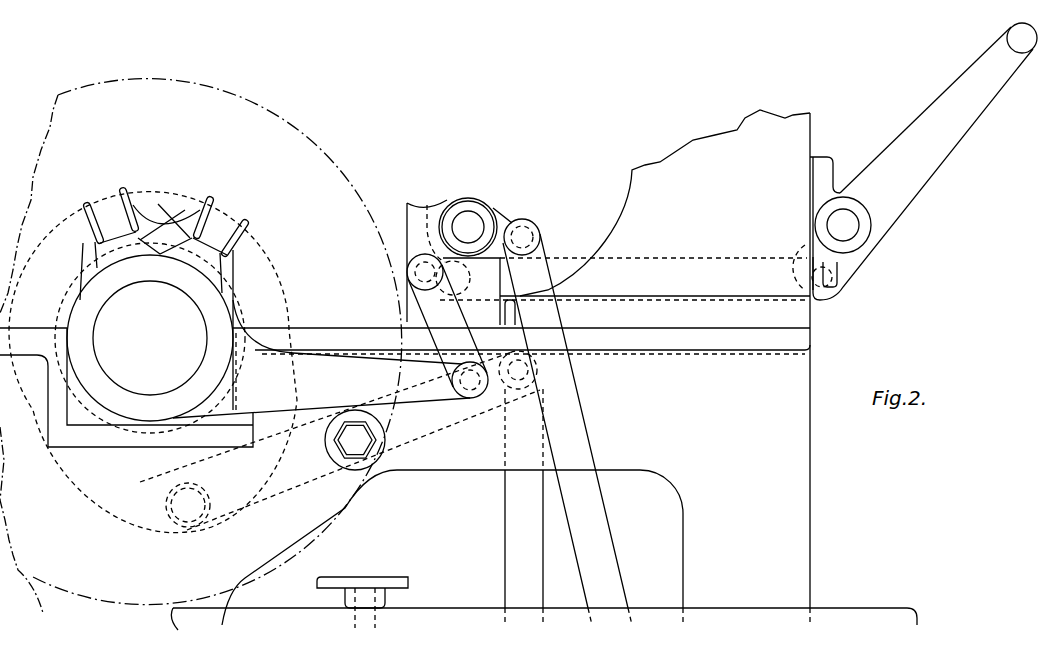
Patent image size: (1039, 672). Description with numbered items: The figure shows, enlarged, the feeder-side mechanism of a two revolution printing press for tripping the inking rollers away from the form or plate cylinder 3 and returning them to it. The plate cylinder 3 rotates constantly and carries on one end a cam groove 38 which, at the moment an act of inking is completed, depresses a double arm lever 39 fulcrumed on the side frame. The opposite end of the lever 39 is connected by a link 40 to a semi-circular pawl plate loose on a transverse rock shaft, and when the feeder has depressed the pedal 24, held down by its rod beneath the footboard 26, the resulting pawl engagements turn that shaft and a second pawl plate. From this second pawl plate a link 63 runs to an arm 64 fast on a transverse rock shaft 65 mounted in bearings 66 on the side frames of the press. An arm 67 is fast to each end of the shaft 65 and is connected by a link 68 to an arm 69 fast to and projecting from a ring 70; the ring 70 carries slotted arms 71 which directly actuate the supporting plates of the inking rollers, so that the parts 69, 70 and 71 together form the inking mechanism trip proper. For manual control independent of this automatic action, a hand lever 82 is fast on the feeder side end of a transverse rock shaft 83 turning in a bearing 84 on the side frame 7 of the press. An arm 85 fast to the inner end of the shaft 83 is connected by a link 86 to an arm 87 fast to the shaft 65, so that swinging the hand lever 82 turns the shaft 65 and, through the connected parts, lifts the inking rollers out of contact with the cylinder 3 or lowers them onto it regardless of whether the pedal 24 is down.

The form or plate cylinder 3 is at (333, 157).
The frame 7 is at (517, 367).
The pedal 24 is at (409, 583).
The footboard 26 is at (698, 612).
The cam groove 38 is at (136, 494).
The double arm lever 39 is at (432, 437).
The link 40 is at (505, 518).
The link 63 is at (612, 535).
The arm 64 is at (520, 220).
The transverse rock shaft 65 is at (468, 227).
The bearings 66 is at (500, 291).
The arm 67 is at (428, 246).
The link 68 is at (427, 307).
The arm 69 is at (360, 350).
The ring 70 is at (197, 277).
The slotted arms 71 is at (156, 206).
The hand lever 82 is at (942, 144).
The transverse rock shaft 83 is at (843, 228).
The bearing 84 is at (822, 177).
The arm 85 is at (850, 261).
The link 86 is at (570, 266).
The arm 87 is at (433, 207).